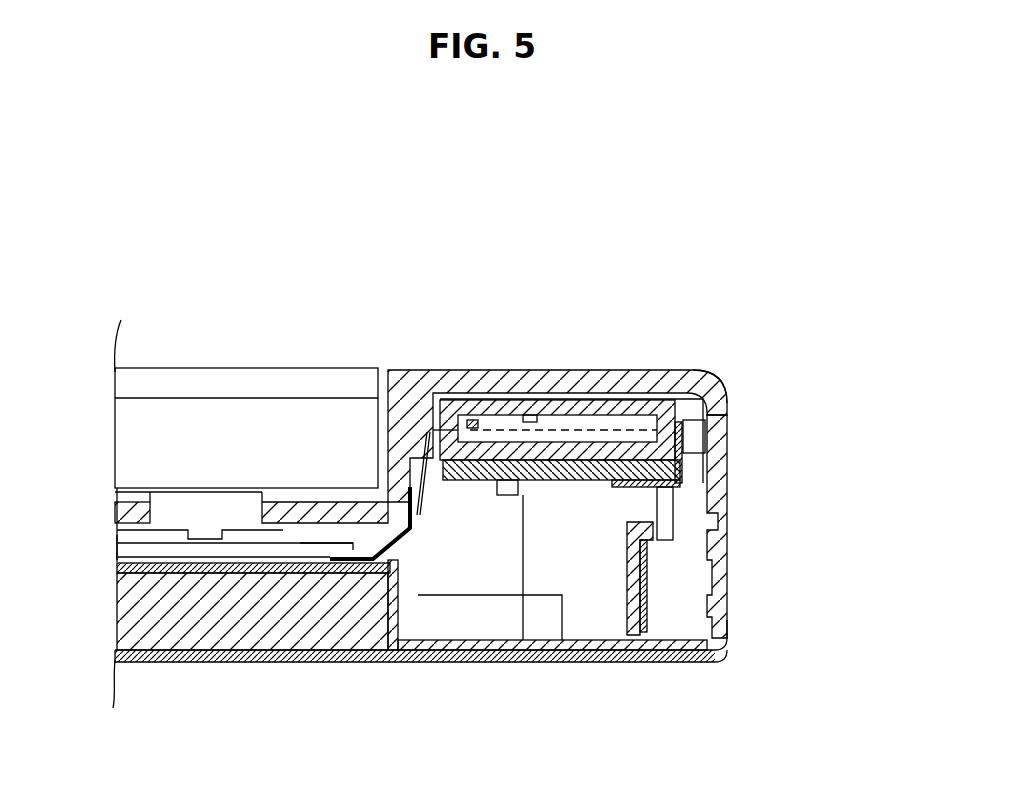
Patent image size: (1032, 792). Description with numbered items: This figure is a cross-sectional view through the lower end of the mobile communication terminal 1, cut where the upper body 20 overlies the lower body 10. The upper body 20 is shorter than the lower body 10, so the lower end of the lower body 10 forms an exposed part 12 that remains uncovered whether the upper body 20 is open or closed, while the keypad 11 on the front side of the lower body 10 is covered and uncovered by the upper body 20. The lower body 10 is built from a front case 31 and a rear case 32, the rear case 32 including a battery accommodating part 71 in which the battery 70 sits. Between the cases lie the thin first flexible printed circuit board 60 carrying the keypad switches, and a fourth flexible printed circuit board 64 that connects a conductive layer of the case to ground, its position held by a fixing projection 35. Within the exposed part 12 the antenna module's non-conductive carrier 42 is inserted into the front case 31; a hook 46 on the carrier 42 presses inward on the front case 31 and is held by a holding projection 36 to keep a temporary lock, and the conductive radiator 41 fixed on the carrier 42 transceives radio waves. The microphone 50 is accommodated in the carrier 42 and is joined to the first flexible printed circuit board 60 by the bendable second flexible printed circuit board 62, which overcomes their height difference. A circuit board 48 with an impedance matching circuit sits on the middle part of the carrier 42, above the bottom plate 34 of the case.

The mobile communication terminal 1 is at (829, 305).
The lower body 10 is at (737, 443).
The keypad 11 is at (165, 496).
The exposed part 12 is at (606, 370).
The upper body 20 is at (244, 362).
The front case 31 is at (717, 473).
The rear case 32 is at (705, 547).
The bottom plate 34 is at (650, 652).
The fixing projection 35 is at (422, 515).
The holding projection 36 is at (728, 410).
The radiator 41 is at (647, 567).
The carrier 42 is at (641, 470).
The hook 46 is at (683, 420).
The circuit board 48 is at (525, 495).
The microphone 50 is at (527, 420).
The first flexible printed circuit board 60 is at (298, 552).
The second flexible printed circuit board 62 is at (430, 487).
The fourth flexible printed circuit board 64 is at (355, 550).
The battery 70 is at (246, 613).
The battery accommodating part 71 is at (188, 565).